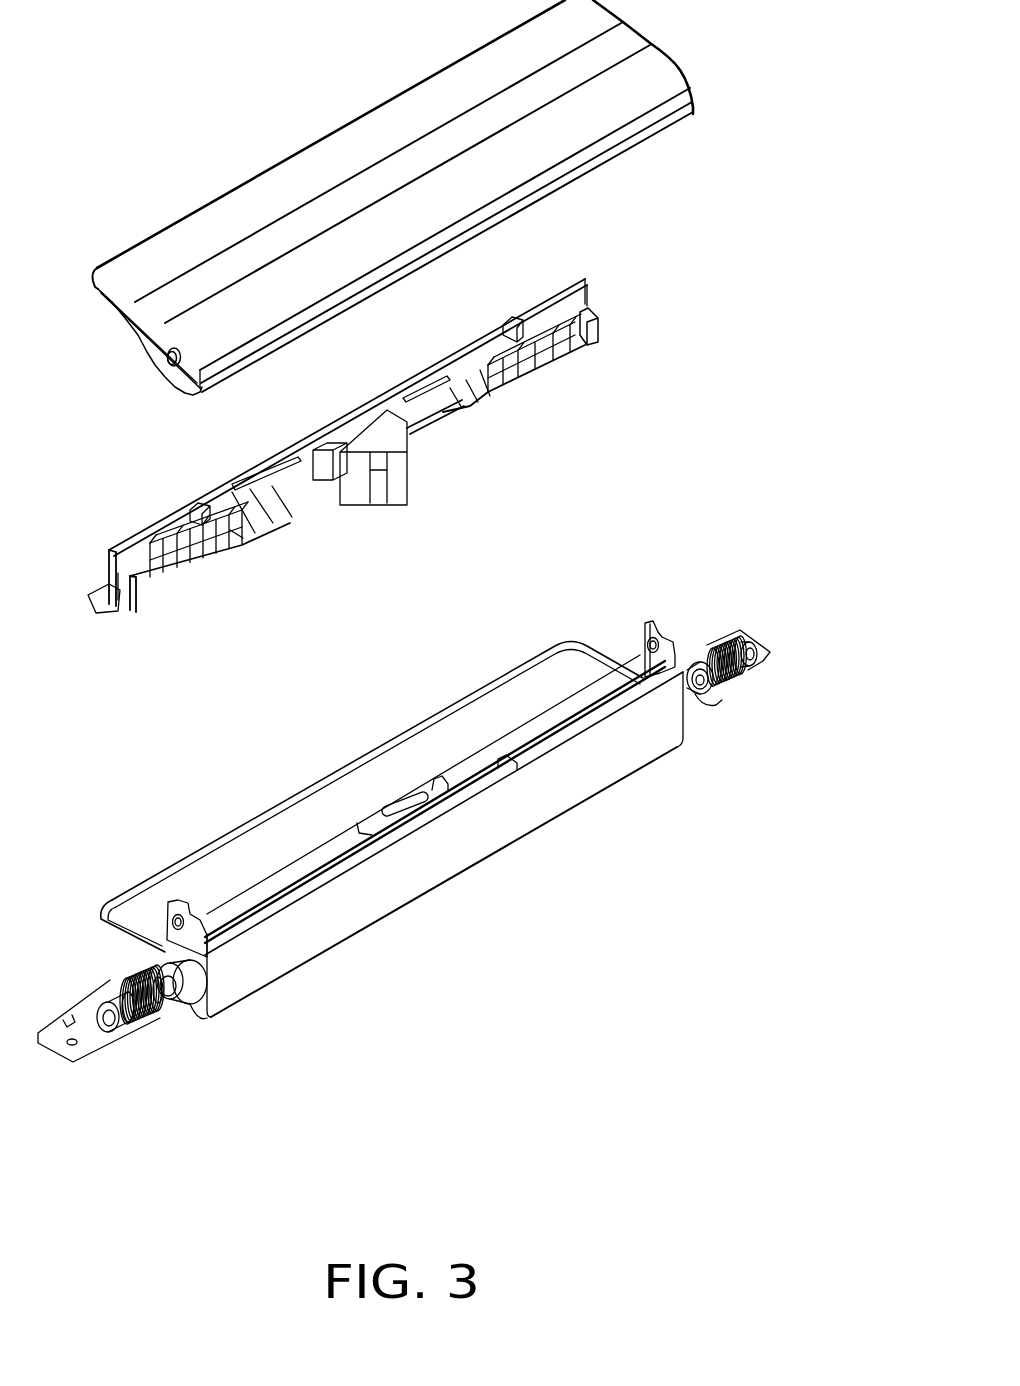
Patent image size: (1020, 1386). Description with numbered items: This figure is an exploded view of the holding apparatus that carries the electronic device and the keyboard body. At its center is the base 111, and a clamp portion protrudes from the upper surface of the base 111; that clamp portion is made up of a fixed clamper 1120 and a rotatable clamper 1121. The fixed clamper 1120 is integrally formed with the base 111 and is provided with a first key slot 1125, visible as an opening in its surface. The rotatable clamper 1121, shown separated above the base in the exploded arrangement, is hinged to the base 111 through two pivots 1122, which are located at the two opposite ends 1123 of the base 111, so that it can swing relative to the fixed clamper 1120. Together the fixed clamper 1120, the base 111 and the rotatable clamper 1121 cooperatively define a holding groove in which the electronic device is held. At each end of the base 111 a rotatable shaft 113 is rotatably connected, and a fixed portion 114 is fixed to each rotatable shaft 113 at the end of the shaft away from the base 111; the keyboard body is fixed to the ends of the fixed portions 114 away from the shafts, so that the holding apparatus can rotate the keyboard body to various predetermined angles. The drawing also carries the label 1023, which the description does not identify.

The rotatable clamper 1121 is at (448, 205).
The opposite ends of the base 1123 is at (683, 67).
The fixed clamper 1120 is at (399, 802).
The flange of base 1023 is at (297, 796).
The base 111 is at (340, 907).
The first key slot 1125 is at (421, 807).
The pivots 1122 is at (165, 926).
The rotatable shafts 113 is at (190, 1021).
The fixed portions 114 is at (117, 1031).